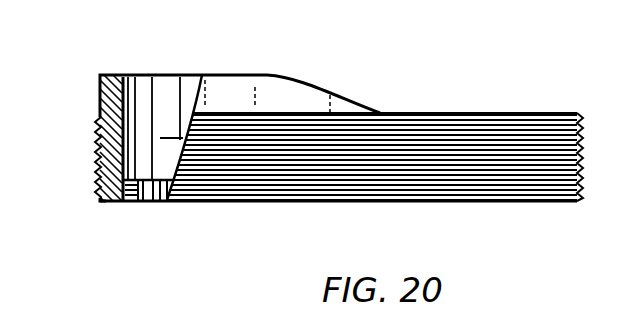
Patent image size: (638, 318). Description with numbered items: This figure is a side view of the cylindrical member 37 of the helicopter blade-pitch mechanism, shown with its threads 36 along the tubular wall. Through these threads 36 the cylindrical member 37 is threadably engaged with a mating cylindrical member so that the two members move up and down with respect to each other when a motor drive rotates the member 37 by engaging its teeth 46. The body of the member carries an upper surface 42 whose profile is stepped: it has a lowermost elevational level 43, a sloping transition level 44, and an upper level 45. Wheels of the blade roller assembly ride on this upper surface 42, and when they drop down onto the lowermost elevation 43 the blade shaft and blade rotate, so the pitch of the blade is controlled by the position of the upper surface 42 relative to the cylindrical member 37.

The external threads 36 is at (96, 162).
The cylindrical member 37 is at (103, 203).
The upper surface 42 is at (107, 74).
The lowermost elevation 43 is at (552, 114).
The transitional elevation 44 is at (322, 88).
The uppermost elevation 45 is at (200, 78).
The teeth 46 is at (148, 205).